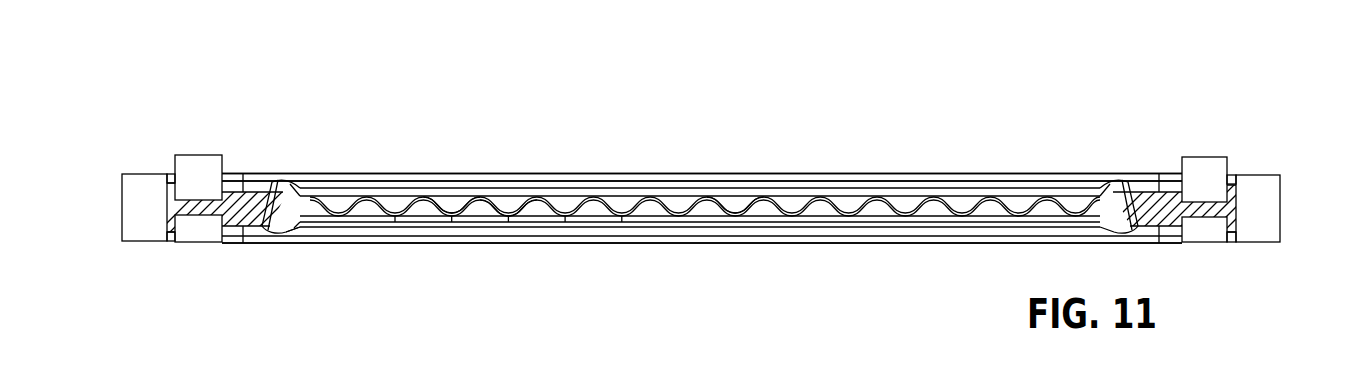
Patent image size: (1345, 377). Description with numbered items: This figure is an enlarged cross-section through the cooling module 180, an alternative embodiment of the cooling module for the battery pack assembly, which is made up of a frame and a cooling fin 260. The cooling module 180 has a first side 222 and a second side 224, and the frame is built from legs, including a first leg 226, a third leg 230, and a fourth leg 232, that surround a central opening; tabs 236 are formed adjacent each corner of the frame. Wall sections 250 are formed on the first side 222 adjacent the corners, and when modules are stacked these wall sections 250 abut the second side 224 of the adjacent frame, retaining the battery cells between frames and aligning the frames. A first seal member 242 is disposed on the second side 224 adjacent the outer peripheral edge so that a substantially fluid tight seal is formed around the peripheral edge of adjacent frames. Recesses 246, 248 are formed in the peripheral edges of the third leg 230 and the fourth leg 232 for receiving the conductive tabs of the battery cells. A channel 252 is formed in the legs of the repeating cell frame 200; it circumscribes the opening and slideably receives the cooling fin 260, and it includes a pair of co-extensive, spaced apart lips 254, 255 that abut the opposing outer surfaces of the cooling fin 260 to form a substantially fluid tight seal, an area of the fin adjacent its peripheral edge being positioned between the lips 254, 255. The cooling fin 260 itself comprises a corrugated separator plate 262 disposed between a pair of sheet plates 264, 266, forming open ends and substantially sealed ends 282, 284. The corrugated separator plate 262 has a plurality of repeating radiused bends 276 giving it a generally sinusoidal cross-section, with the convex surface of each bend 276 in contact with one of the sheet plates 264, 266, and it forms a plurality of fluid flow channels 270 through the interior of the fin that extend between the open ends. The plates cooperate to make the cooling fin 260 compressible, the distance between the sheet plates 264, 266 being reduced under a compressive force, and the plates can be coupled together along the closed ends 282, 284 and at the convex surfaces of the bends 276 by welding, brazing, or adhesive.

The cooling module 180 is at (1080, 78).
The repeating cell frame 200 is at (905, 155).
The first side 222 is at (236, 173).
The second side 224 is at (236, 243).
The first leg 226 is at (562, 182).
The third leg 230 is at (168, 205).
The fourth leg 232 is at (1238, 205).
The tabs 236 is at (146, 174).
The first seal member 242 is at (1205, 243).
The recess 246 is at (170, 176).
The recess 248 is at (170, 240).
The wall sections 250 is at (198, 155).
The channel 252 is at (1097, 228).
The lip 254 is at (300, 192).
The lip 255 is at (300, 230).
The cooling fin 260 is at (805, 180).
The corrugated separator plate 262 is at (725, 198).
The sheet plate 264 is at (670, 197).
The sheet plate 266 is at (755, 222).
The fluid flow channels 270 is at (453, 208).
The radiused bends 276 is at (508, 213).
The sealed end 282 is at (268, 192).
The sealed end 284 is at (1108, 194).